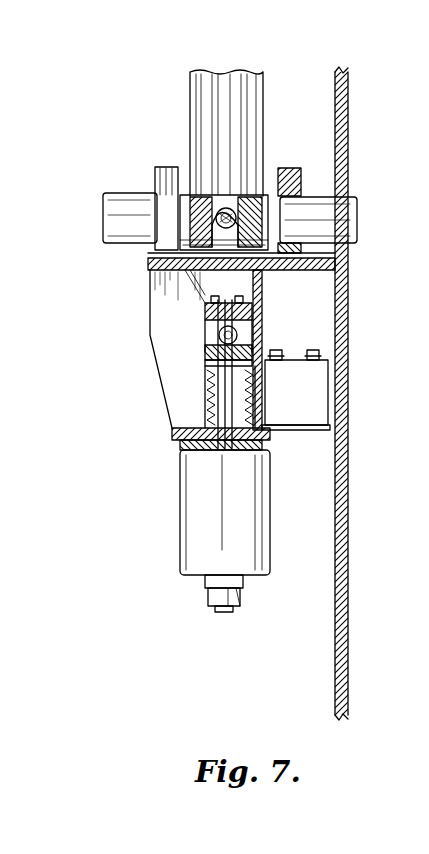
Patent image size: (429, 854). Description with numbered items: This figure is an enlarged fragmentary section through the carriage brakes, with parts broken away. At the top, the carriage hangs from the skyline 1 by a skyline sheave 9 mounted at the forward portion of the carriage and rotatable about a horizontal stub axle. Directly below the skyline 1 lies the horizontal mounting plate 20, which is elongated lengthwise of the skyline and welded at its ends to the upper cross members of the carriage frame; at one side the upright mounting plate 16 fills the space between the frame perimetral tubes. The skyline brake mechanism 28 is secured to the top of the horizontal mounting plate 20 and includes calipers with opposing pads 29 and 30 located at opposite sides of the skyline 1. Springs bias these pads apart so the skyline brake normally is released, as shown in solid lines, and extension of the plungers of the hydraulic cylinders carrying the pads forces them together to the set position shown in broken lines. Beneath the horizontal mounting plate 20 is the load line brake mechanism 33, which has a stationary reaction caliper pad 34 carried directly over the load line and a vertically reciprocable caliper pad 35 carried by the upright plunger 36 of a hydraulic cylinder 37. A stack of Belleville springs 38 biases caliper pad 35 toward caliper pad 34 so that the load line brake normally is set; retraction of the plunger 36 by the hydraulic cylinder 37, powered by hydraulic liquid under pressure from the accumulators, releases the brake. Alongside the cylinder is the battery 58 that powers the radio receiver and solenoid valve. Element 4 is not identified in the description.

The skyline 1 is at (228, 207).
The support block 4 is at (230, 350).
The skyline sheave 9 is at (246, 95).
The upright mounting plate 16 is at (345, 556).
The horizontal mounting plate 20 is at (332, 264).
The skyline brake mechanism 28 is at (170, 163).
The caliper pad 29 is at (186, 240).
The caliper pad 30 is at (282, 190).
The load line brake mechanism 33 is at (196, 327).
The stationary reaction caliper pad 34 is at (262, 314).
The vertically reciprocable caliper pad 35 is at (262, 345).
The upright plunger 36 is at (266, 440).
The hydraulic cylinder 37 is at (208, 512).
The stack of Belleville springs 38 is at (212, 380).
The battery 58 is at (315, 385).